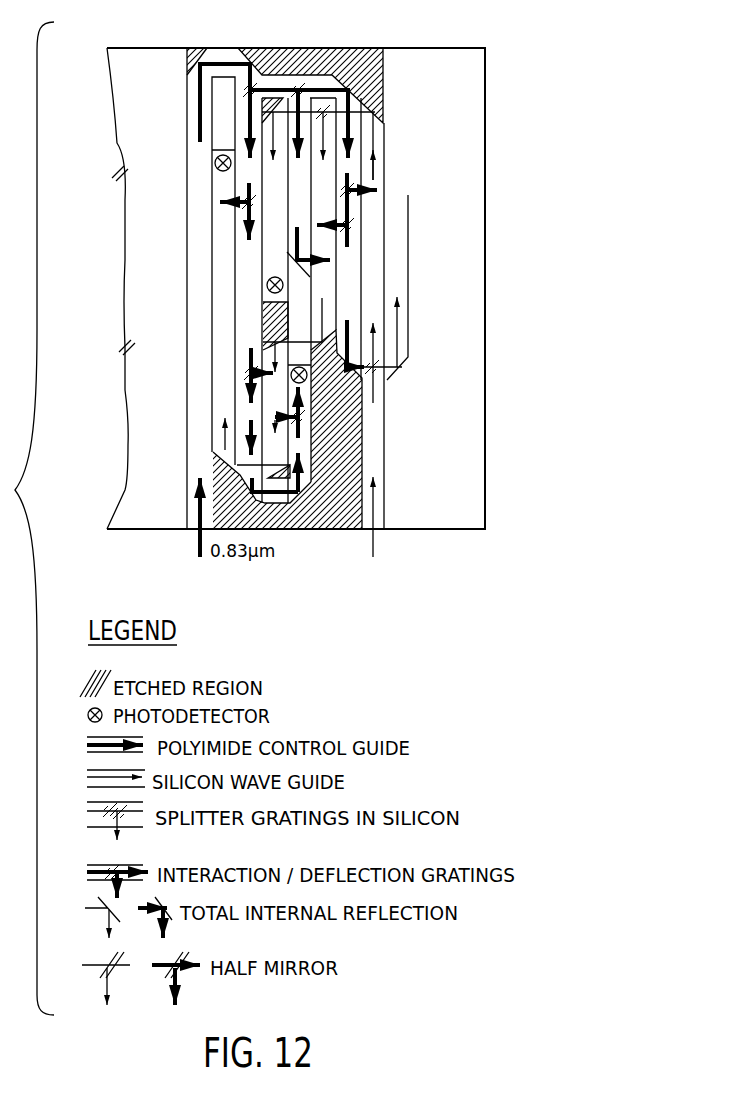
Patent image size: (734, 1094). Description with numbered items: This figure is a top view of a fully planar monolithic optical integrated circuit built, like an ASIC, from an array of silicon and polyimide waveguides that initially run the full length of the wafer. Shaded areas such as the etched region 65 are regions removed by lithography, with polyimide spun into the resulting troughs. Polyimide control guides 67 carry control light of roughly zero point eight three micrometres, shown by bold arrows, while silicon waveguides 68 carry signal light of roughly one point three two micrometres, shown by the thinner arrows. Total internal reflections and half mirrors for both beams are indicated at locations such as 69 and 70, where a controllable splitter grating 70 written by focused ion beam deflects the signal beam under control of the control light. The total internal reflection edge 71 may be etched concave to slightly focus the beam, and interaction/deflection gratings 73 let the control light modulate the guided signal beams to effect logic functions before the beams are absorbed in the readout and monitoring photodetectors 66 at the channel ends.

The etched region 65 is at (320, 512).
The photodetector 66 is at (213, 162).
The polyimide control guide 67 is at (197, 298).
The silicon waveguide 68 is at (373, 458).
The total internal reflection location 69 is at (385, 120).
The controllable splitter grating 70 is at (323, 110).
The total internal reflection edge 71 is at (372, 366).
The interaction/deflection gratings 73 is at (352, 183).